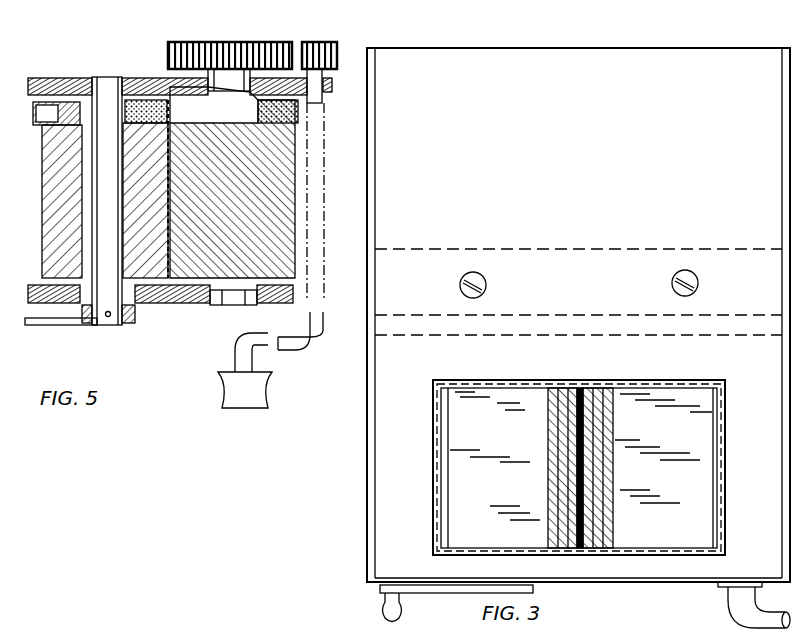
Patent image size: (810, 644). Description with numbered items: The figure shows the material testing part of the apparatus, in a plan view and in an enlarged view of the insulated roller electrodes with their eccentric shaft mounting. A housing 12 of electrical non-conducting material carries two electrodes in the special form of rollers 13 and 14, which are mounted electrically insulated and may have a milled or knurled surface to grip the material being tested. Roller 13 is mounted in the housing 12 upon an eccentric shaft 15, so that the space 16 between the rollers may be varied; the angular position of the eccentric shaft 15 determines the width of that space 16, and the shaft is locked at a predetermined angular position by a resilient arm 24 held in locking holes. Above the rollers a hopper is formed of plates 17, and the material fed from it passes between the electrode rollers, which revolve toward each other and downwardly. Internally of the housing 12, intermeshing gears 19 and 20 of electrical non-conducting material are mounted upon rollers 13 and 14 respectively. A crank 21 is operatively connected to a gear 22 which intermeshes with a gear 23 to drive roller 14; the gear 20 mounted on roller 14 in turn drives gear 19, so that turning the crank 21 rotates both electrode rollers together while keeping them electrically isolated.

In FIG. 5, the housing 12 is at (44, 80).
In FIG. 3, the housing 12 is at (370, 486).
In FIG. 5, the roller 13 is at (140, 202).
In FIG. 3, the roller 13 is at (566, 446).
In FIG. 5, the roller 14 is at (190, 282).
In FIG. 3, the roller 14 is at (608, 440).
In FIG. 5, the eccentric shaft 15 is at (101, 186).
In FIG. 5, the space 16 is at (168, 238).
In FIG. 3, the space 16 is at (590, 465).
In FIG. 3, the plates 17 is at (519, 395).
In FIG. 5, the gear 19 is at (68, 102).
In FIG. 5, the gear 20 is at (208, 72).
In FIG. 5, the crank 21 is at (256, 350).
In FIG. 3, the crank 21 is at (737, 602).
In FIG. 5, the gear 22 is at (324, 58).
In FIG. 5, the gear 23 is at (168, 49).
In FIG. 5, the resilient arm 24 is at (72, 324).
In FIG. 3, the resilient arm 24 is at (418, 596).